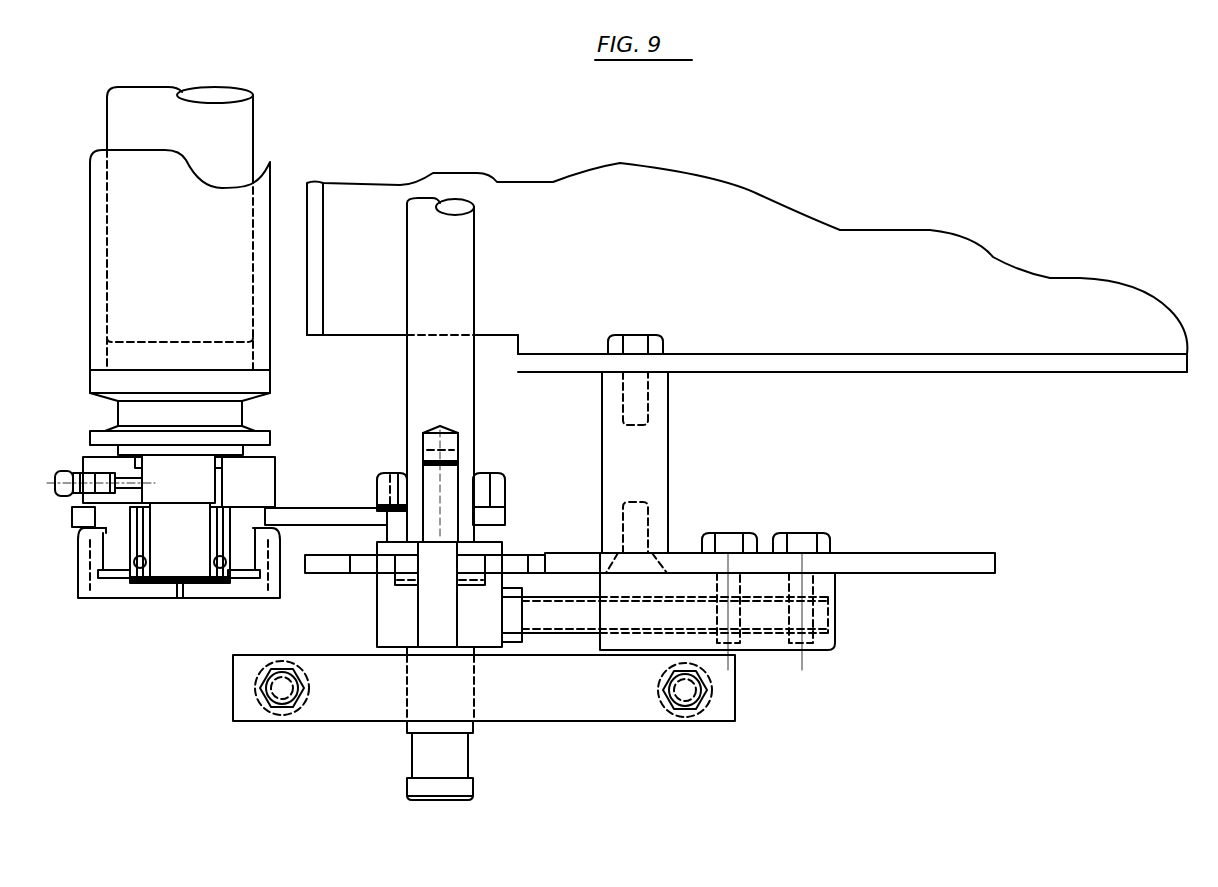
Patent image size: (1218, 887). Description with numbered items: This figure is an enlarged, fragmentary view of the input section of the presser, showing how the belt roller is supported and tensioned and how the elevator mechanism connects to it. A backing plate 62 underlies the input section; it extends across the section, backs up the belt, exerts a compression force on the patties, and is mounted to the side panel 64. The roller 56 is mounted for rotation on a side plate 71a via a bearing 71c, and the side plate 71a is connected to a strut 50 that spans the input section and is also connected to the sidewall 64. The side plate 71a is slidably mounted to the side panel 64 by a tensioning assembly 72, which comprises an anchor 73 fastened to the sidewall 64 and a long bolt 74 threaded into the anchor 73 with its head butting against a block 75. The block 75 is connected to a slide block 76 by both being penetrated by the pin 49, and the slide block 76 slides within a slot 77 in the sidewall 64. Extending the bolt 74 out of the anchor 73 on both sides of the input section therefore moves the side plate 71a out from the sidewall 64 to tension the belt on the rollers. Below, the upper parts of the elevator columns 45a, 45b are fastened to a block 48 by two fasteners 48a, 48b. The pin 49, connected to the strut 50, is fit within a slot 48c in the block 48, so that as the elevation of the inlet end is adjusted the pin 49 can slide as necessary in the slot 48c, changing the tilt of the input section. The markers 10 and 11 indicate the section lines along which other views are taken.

The roller 56 is at (253, 125).
The strut 50 is at (475, 282).
The backing plate 62 is at (827, 354).
The side panel 64 is at (866, 553).
The side plate 71a is at (332, 507).
The bearing 71c is at (102, 598).
The slide block 76 is at (505, 543).
The long bolt 74 is at (556, 597).
The slot 77 is at (362, 566).
The block 75 is at (378, 600).
The tensioning assembly 72 is at (838, 622).
The anchor 73 is at (766, 655).
The block 48 is at (737, 727).
The fastener 48a is at (283, 687).
The fastener 48b is at (687, 690).
The slot 48c is at (320, 710).
The column 45a is at (297, 712).
The column 45b is at (690, 720).
The pin 49 is at (475, 790).
The section line 10- 10 is at (84, 690).
The section line 11- 11 is at (84, 827).